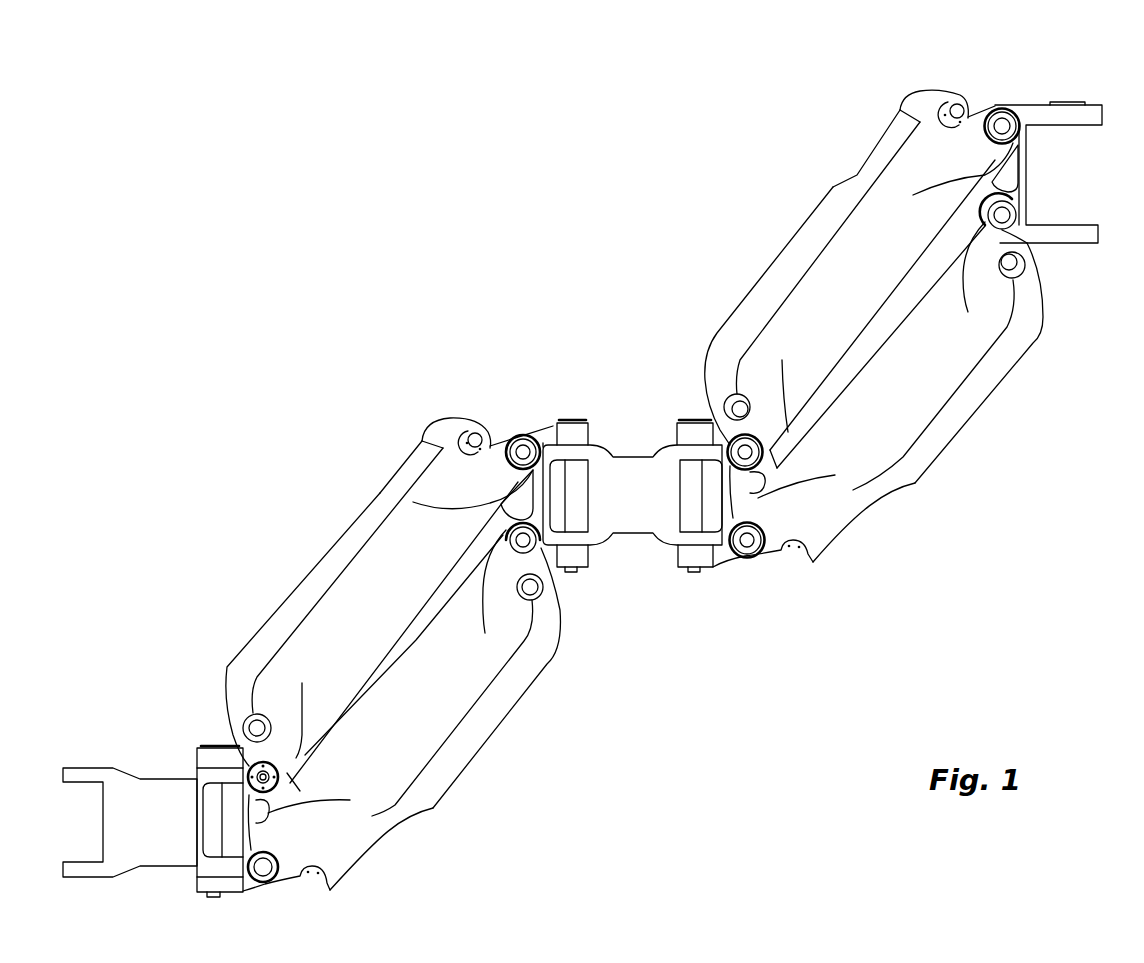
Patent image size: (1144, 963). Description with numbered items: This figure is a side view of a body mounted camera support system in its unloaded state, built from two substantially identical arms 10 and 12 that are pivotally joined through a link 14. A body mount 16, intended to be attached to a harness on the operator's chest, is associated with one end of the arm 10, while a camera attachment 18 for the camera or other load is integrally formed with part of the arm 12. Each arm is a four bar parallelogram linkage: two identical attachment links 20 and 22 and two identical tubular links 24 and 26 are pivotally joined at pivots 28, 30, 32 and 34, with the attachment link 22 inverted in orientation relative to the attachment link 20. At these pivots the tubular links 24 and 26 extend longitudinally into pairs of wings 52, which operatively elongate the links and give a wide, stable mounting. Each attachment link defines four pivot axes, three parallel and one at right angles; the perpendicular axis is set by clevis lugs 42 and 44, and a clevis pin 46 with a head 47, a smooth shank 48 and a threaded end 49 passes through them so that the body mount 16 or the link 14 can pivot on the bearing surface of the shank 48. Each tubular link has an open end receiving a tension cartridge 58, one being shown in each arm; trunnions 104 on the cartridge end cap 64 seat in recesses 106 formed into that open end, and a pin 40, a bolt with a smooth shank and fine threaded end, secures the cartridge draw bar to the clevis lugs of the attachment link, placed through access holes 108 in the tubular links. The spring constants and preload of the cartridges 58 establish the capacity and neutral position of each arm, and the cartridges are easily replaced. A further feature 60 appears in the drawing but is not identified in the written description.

The arm 10 is at (280, 585).
The arm 12 is at (794, 200).
The link 14 is at (633, 455).
The body mount 16 is at (150, 770).
The camera attachment 18 is at (1065, 102).
The attachment link 20 is at (250, 890).
The attachment link 22 is at (543, 428).
The tubular link 24 is at (237, 655).
The tubular link 26 is at (528, 688).
The pivot 28 is at (267, 763).
The pivot 30 is at (277, 863).
The pivot 32 is at (633, 481).
The pivot 34 is at (510, 552).
The pin 40 is at (253, 715).
The clevis lug 42 is at (220, 755).
The clevis lug 44 is at (200, 893).
The clevis pin 46 is at (573, 498).
The head 47 is at (197, 746).
The smooth shank 48 is at (213, 808).
The threaded end 49 is at (213, 898).
The wings 52 is at (492, 455).
The tension cartridge 58 is at (382, 467).
The web surface 60 is at (377, 493).
The end cap 64 is at (430, 420).
The trunnions 104 is at (471, 433).
The recesses 106 is at (308, 882).
The access holes 108 is at (268, 722).